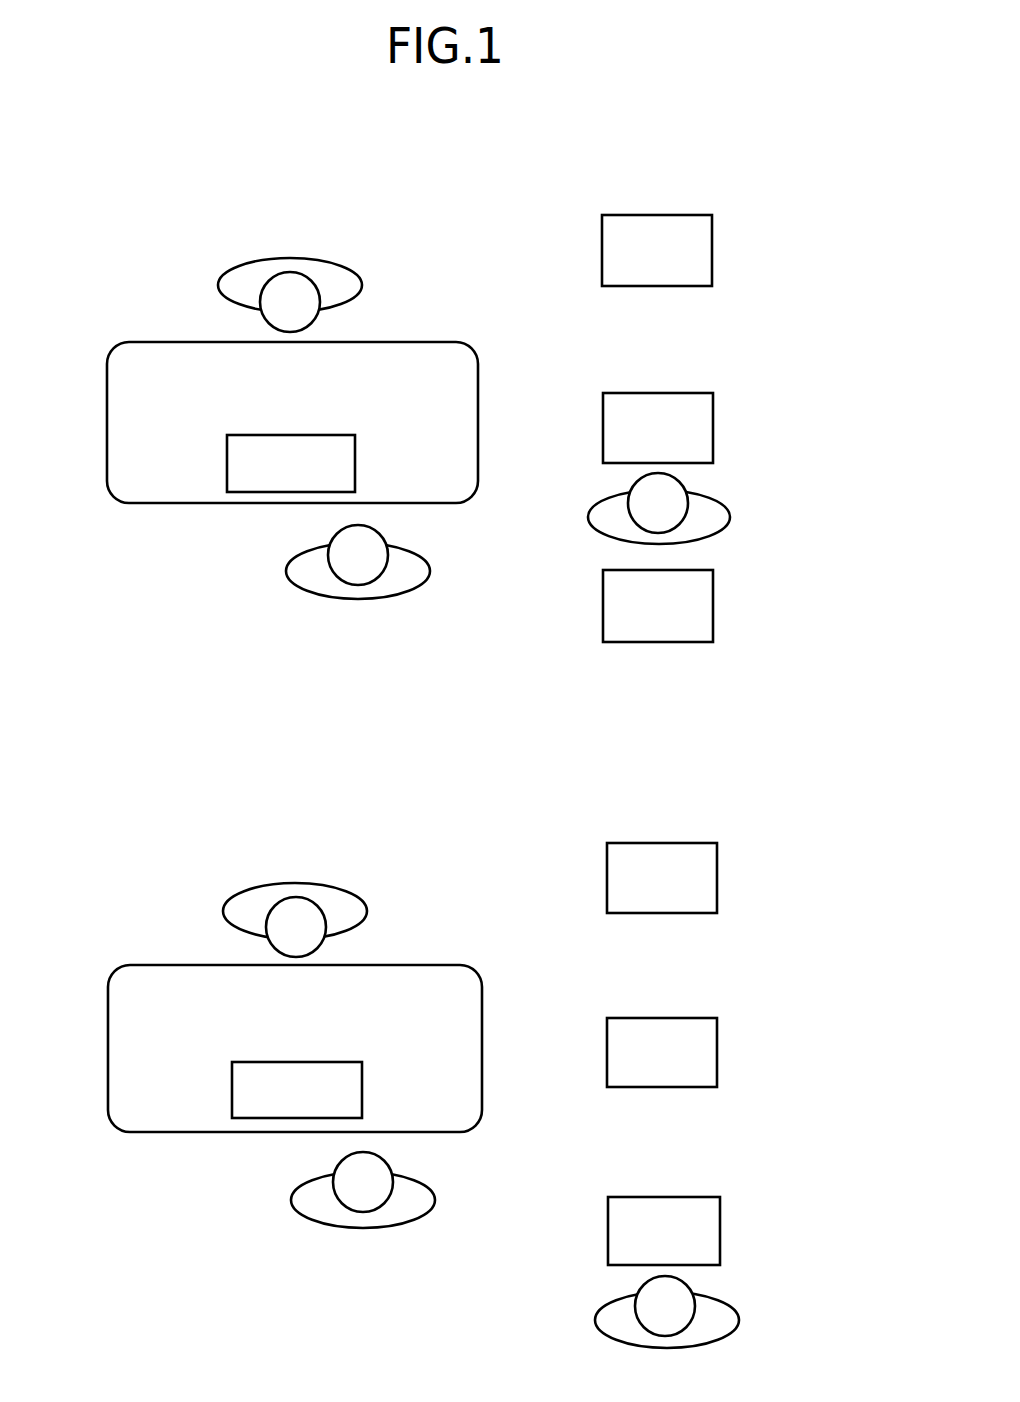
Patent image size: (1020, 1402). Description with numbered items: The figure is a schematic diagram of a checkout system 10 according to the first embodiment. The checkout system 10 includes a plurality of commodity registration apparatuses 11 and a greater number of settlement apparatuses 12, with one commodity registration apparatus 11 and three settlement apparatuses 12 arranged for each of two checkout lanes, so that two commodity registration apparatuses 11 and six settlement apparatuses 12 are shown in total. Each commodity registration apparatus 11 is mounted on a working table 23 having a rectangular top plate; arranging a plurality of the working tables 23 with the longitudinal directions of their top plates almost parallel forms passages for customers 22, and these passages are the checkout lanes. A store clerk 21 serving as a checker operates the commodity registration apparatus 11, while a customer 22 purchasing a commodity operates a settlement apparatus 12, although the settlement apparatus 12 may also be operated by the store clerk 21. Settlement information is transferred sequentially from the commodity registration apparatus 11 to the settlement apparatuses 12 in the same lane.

The checkout system 10 is at (110, 199).
The commodity registration apparatus 11 is at (346, 432).
The settlement apparatus 12 is at (712, 244).
The store clerk 21 is at (326, 262).
The customer 22 is at (405, 599).
The working table 23 is at (443, 340).